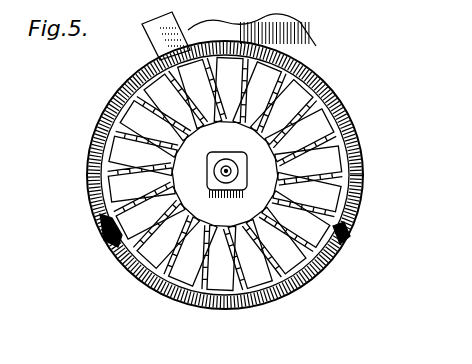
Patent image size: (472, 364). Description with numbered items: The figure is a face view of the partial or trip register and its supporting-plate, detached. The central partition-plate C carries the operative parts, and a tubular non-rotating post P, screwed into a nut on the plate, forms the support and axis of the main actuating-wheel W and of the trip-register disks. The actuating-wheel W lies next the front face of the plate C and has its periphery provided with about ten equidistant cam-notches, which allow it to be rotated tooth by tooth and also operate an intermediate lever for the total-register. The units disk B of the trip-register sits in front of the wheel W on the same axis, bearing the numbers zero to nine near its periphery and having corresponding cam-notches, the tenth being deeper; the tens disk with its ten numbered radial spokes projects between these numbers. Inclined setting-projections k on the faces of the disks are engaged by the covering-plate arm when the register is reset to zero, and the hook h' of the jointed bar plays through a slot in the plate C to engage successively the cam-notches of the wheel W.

The main actuating-wheel W is at (343, 101).
The units disk of the trip-register B is at (97, 124).
The tubular non-rotating post P is at (248, 172).
The central partition-plate C is at (300, 47).
The setting-projections k is at (194, 50).
The hook of the jointed bar h' is at (94, 230).